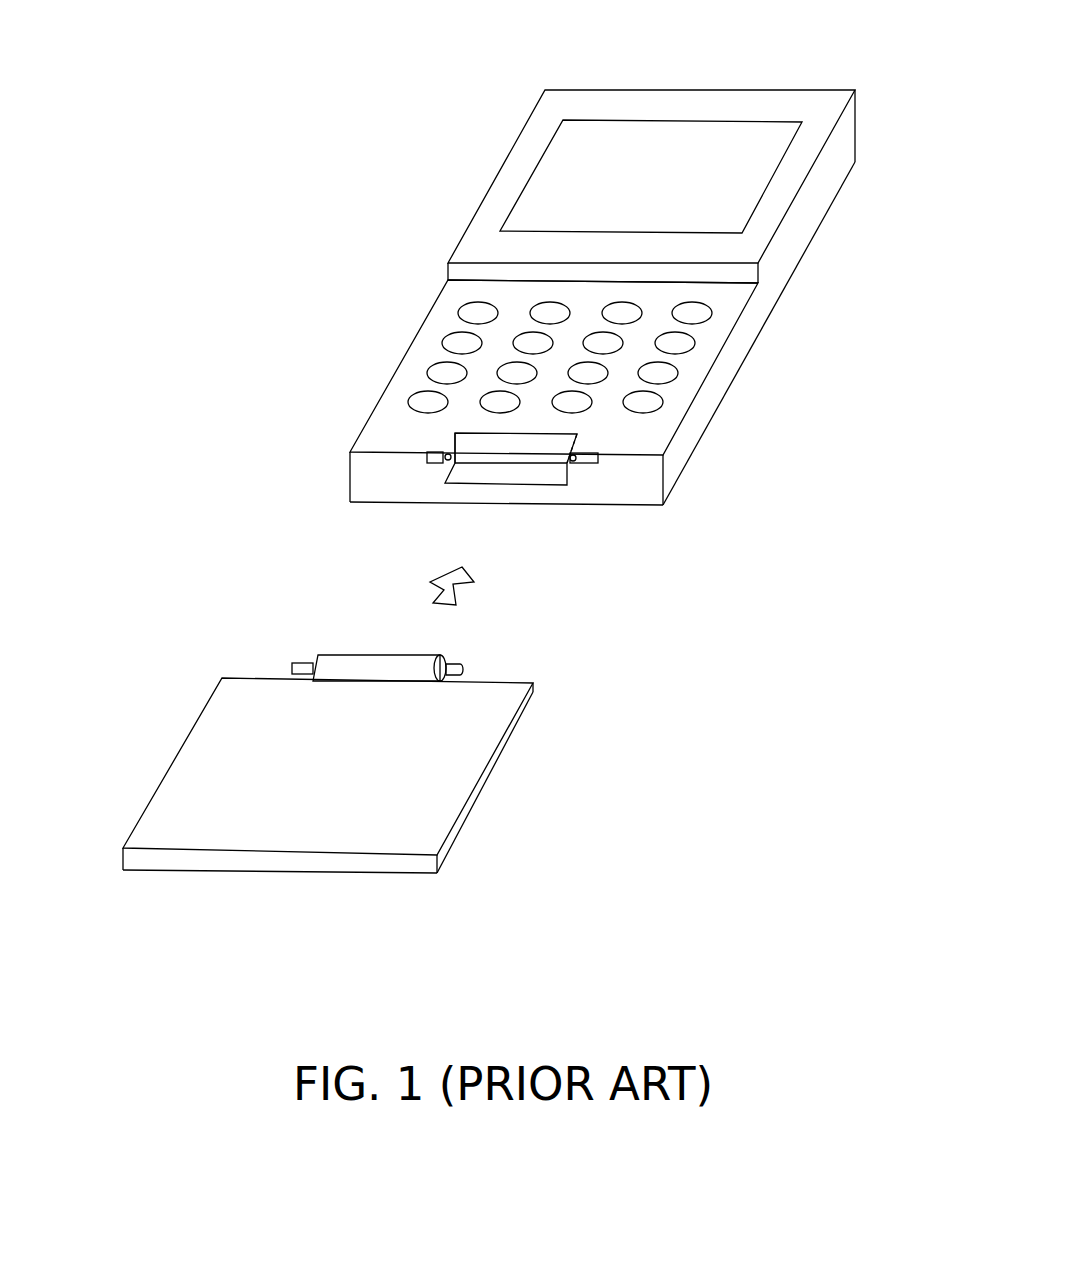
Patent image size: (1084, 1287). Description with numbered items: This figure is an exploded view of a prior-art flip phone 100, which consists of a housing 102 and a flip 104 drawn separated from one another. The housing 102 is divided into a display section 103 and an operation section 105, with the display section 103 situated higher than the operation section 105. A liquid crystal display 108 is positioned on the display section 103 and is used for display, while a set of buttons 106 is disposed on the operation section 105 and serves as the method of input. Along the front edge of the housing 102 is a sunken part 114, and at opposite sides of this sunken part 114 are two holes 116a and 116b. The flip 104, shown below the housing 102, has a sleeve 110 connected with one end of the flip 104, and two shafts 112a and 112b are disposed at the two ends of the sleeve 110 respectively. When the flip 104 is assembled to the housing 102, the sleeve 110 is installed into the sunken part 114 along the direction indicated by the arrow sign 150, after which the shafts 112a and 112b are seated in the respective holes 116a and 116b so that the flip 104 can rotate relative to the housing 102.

The flip phone 100 is at (886, 37).
The housing 102 is at (820, 182).
The display section 103 is at (615, 100).
The flip 104 is at (503, 747).
The operation section 105 is at (738, 300).
The buttons 106 is at (697, 317).
The liquid crystal display 108 is at (668, 137).
The sleeve 110 is at (382, 667).
The shaft 112a is at (458, 667).
The shaft 112b is at (292, 667).
The sunken part 114 is at (528, 467).
The hole 116a is at (585, 467).
The hole 116b is at (442, 463).
The arrow sign 150 is at (430, 593).